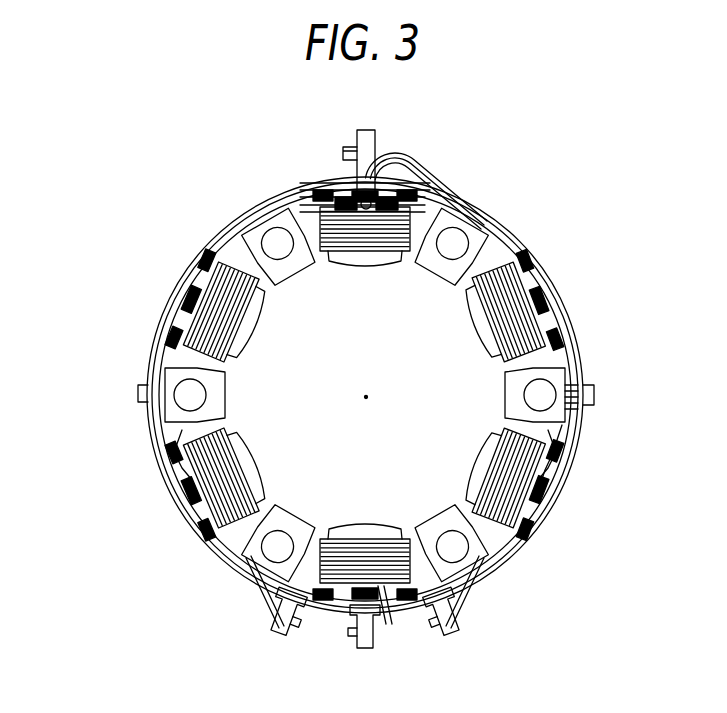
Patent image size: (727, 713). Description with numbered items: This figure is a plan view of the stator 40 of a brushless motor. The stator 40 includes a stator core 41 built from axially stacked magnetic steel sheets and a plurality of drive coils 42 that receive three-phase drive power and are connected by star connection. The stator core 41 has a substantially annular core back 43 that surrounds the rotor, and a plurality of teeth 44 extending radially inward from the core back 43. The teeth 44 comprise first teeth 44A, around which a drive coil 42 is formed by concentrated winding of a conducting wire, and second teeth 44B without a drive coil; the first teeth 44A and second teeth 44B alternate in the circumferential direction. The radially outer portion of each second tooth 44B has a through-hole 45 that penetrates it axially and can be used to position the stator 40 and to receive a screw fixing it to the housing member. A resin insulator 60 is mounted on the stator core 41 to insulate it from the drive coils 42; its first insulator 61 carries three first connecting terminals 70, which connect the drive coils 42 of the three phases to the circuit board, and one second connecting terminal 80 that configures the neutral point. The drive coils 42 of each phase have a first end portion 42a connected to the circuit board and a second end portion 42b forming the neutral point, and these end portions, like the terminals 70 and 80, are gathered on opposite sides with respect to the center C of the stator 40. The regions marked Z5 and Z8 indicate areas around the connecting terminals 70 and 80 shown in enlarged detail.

The stator 40 is at (88, 125).
The stator core 41 is at (633, 371).
The drive coil 42 is at (337, 395).
The first end portion 42a is at (268, 612).
The second end portion 42b is at (395, 150).
The core back 43 is at (152, 356).
The teeth 44 is at (429, 395).
The first teeth 44A is at (388, 530).
The second teeth 44B is at (310, 490).
The through-hole 45 is at (285, 262).
The insulator 60 is at (612, 455).
The first insulator 61 is at (572, 435).
The first connecting terminal 70 is at (275, 640).
The second connecting terminal 80 is at (357, 140).
The center of the stator C is at (368, 397).
The enlarged region Z5 is at (365, 690).
The enlarged region Z8 is at (365, 82).